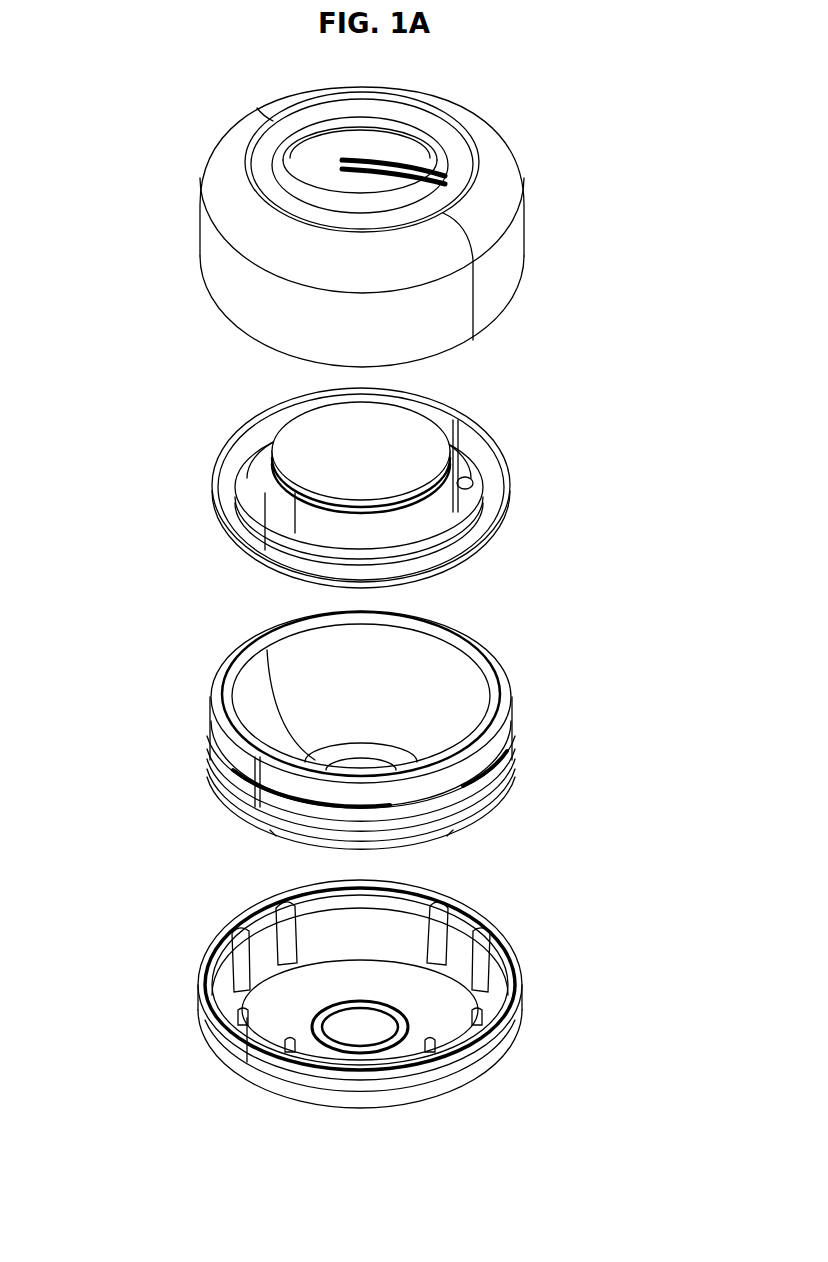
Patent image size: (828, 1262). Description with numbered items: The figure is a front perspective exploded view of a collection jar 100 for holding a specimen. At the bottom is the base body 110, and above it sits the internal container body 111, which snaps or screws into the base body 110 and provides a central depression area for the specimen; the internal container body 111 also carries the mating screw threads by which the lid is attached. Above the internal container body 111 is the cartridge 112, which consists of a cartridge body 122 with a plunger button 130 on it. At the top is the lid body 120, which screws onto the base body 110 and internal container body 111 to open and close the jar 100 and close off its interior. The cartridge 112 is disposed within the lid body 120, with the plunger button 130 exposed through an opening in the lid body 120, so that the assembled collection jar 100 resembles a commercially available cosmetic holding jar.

The collection jar 100 is at (167, 250).
The base body 110 is at (492, 1042).
The internal container body 111 is at (475, 768).
The cartridge 112 is at (378, 468).
The lid body 120 is at (502, 277).
The cartridge body 122 is at (463, 537).
The plunger button 130 is at (405, 457).